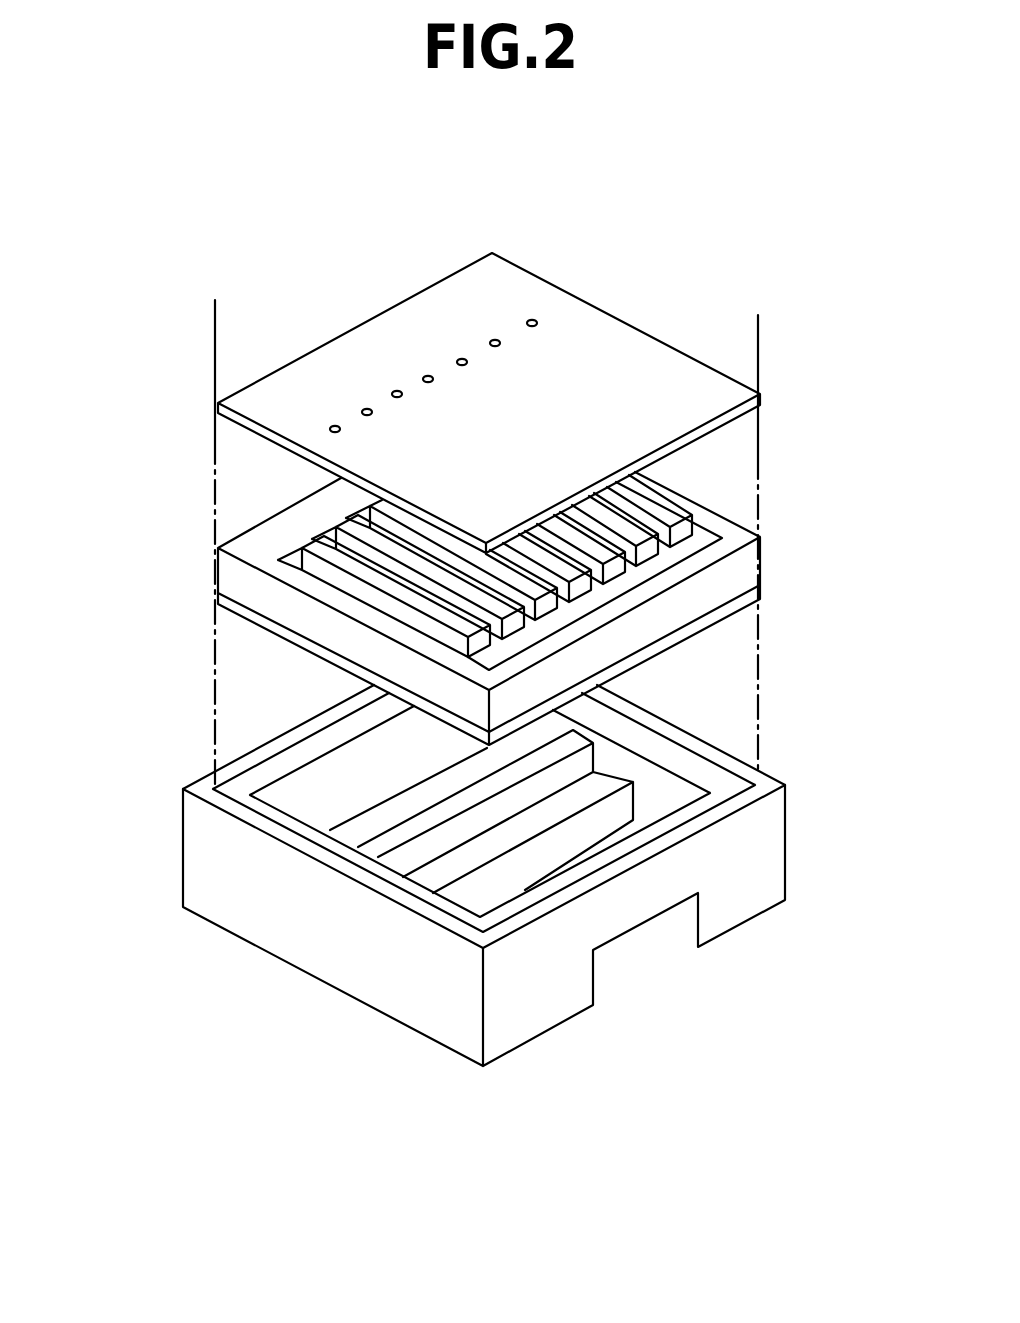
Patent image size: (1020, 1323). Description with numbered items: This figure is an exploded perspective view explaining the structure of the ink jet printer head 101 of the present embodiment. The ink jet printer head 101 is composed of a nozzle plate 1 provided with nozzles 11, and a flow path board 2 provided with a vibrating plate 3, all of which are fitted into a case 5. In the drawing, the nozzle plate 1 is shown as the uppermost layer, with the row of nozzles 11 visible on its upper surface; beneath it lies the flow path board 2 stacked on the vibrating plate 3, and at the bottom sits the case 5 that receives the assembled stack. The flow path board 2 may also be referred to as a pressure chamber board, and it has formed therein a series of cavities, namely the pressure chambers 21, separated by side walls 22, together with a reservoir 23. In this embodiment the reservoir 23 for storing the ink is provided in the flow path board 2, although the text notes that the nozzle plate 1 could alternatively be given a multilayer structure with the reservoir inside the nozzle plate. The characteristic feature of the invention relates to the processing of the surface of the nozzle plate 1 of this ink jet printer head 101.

The nozzle plate 1 is at (706, 378).
The nozzles 11 is at (536, 321).
The flow path board 2 is at (752, 533).
The cavities (pressure chambers) 21 is at (320, 568).
The side walls 22 is at (355, 578).
The reservoir 23 is at (700, 538).
The vibrating plate 3 is at (758, 604).
The case 5 is at (763, 778).
The ink jet printer head 101 is at (245, 1181).